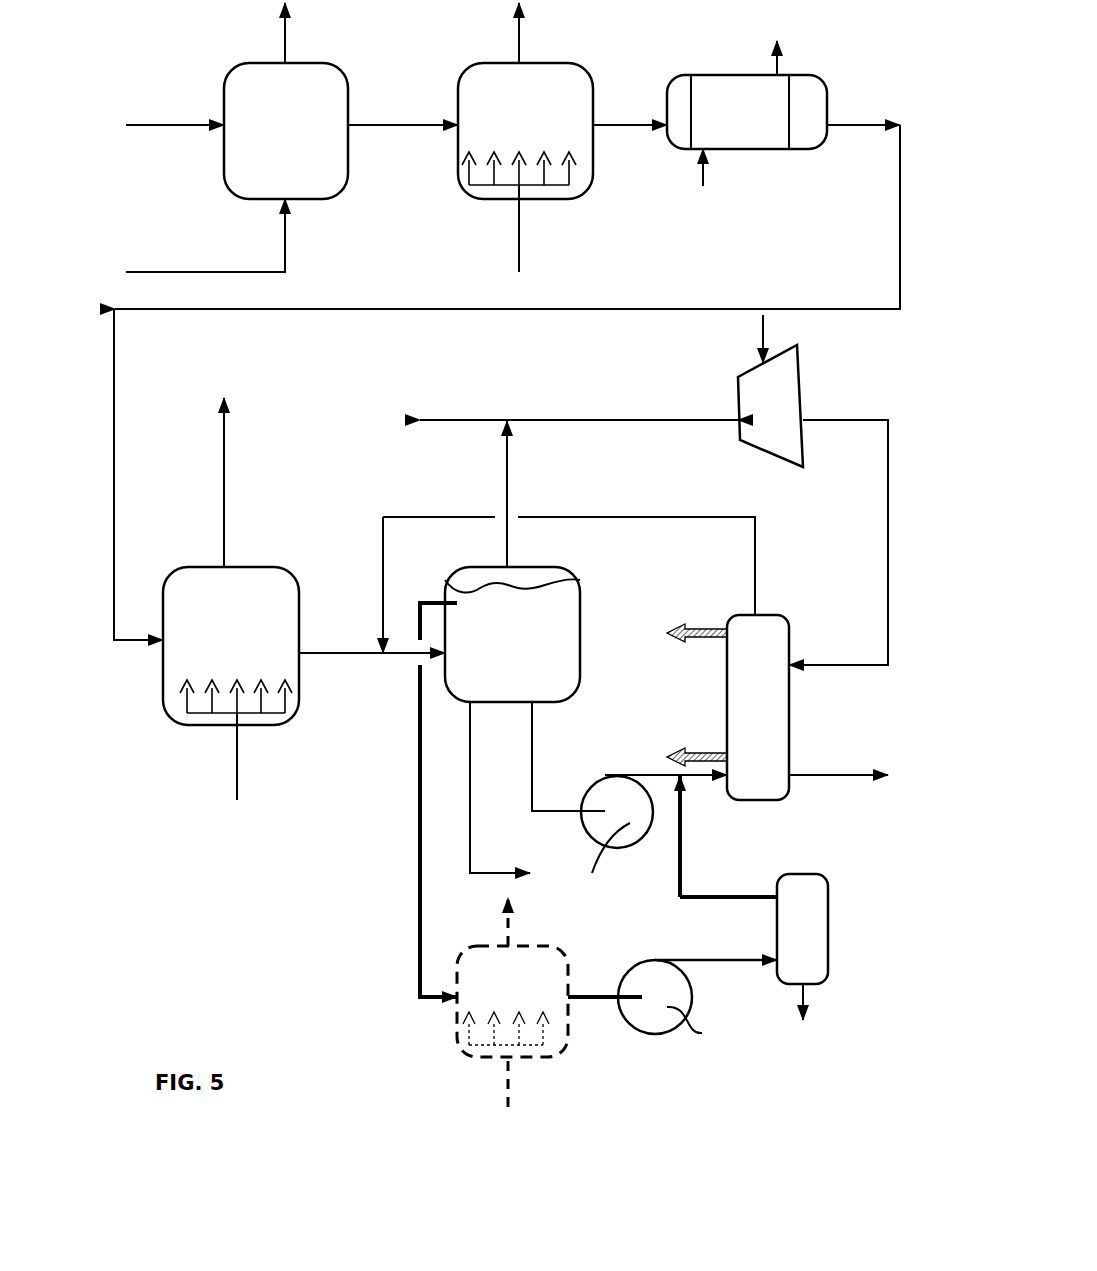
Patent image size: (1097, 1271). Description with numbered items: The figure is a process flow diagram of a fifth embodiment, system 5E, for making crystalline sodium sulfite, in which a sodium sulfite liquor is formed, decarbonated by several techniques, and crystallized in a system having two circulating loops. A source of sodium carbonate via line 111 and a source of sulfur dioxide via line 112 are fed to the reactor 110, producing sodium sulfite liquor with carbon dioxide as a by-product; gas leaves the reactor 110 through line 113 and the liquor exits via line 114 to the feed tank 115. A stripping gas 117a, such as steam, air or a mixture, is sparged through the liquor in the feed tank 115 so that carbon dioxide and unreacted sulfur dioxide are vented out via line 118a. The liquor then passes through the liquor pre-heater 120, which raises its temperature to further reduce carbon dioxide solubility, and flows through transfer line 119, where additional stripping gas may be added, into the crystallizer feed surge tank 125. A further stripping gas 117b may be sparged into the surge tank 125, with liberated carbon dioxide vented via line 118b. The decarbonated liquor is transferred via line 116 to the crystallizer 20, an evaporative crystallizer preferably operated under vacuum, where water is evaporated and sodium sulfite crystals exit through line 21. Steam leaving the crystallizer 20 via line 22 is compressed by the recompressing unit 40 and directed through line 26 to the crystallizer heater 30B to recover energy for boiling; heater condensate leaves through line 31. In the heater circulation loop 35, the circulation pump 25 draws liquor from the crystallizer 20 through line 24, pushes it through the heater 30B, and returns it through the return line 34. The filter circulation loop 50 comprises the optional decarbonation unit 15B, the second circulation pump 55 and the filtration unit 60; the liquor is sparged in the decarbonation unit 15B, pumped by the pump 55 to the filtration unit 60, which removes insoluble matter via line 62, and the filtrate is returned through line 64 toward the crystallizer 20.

The reactor 110 is at (286, 131).
The line 111 is at (188, 125).
The line 112 is at (200, 270).
The overhead stream 113 is at (286, 52).
The line 114 is at (372, 127).
The feed tank 115 is at (525, 131).
The stream to vessel 20 116 is at (323, 653).
The stripping gas 117a is at (519, 240).
The stripping gas 117b is at (237, 762).
The line 118a is at (519, 52).
The line 118b is at (224, 445).
The line 119 is at (827, 309).
The liquor pre-heater 120 is at (710, 113).
The surge tank 125 is at (231, 646).
The crystallizer 20 is at (512, 634).
The line 21 is at (470, 862).
The line 22 is at (507, 470).
The line 24 is at (532, 715).
The circulation pump 25 is at (651, 842).
The line 26 is at (826, 665).
The crystallizer heater 30B is at (728, 707).
The line 31 is at (826, 775).
The return line 34 is at (755, 530).
The heater circulation loop 35 is at (613, 486).
The recompressing unit 40 is at (611, 391).
The filter circulation loop 50 is at (700, 850).
The circulation pump 55 is at (672, 1002).
The filtration unit 60 is at (802, 929).
The line 62 is at (803, 997).
The line 64 is at (680, 873).
The decarbonation unit 15B is at (512, 1002).
The system 5E is at (235, 885).